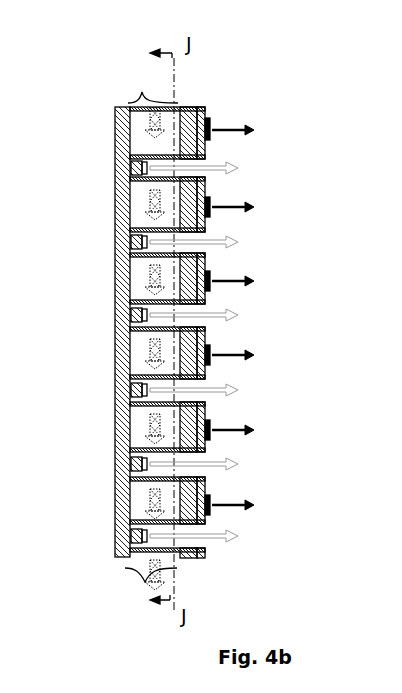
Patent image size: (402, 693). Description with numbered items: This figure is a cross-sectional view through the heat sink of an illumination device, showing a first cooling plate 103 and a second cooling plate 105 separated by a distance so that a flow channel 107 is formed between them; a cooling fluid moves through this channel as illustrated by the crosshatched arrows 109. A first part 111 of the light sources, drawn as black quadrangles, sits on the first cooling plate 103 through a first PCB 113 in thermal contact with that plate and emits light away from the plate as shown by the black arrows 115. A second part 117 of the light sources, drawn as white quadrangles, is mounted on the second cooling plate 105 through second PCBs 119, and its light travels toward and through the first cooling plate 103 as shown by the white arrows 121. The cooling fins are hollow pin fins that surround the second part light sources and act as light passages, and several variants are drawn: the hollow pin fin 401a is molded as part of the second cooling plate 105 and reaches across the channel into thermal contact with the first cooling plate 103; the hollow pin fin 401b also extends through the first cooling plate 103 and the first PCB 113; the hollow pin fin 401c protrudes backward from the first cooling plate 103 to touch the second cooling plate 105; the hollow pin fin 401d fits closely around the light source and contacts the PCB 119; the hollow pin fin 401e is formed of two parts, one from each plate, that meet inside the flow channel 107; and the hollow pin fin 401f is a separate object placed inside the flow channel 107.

The first cooling plate 103 is at (205, 182).
The second cooling plate 105 is at (128, 364).
The flow channel 107 is at (144, 338).
The crosshatched arrows 109 is at (155, 283).
The first part of the light sources 111 is at (205, 213).
The first PCB 113 is at (205, 226).
The black arrows 115 is at (210, 207).
The second part of the light sources 117 is at (138, 165).
The second PCB 119 is at (143, 172).
The white arrows 121 is at (240, 388).
The hollow pin fin 401a is at (168, 206).
The hollow pin fin 401b is at (138, 310).
The hollow pin fin 401c is at (138, 258).
The hollow pin fin 401d is at (138, 404).
The hollow pin fin 401e is at (148, 500).
The hollow pin fin 401f is at (147, 552).